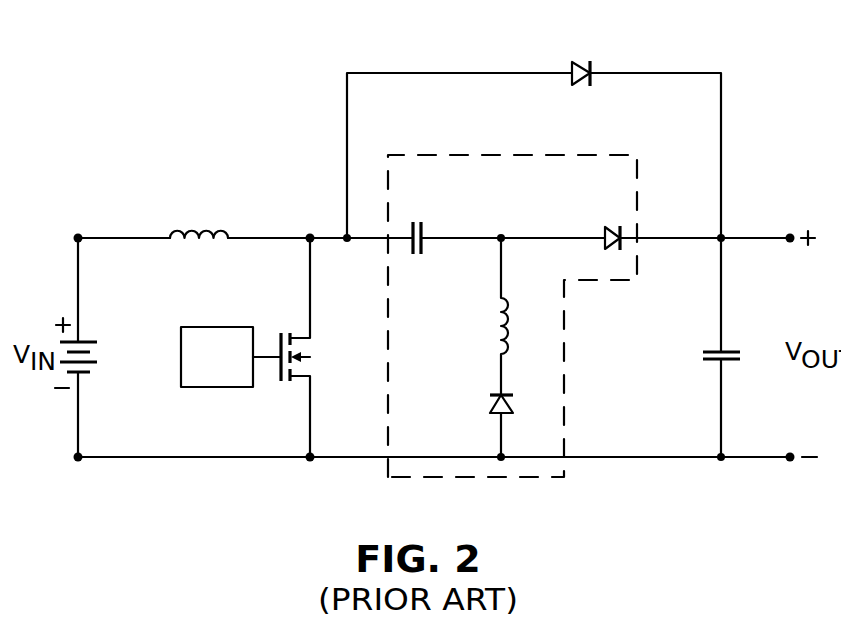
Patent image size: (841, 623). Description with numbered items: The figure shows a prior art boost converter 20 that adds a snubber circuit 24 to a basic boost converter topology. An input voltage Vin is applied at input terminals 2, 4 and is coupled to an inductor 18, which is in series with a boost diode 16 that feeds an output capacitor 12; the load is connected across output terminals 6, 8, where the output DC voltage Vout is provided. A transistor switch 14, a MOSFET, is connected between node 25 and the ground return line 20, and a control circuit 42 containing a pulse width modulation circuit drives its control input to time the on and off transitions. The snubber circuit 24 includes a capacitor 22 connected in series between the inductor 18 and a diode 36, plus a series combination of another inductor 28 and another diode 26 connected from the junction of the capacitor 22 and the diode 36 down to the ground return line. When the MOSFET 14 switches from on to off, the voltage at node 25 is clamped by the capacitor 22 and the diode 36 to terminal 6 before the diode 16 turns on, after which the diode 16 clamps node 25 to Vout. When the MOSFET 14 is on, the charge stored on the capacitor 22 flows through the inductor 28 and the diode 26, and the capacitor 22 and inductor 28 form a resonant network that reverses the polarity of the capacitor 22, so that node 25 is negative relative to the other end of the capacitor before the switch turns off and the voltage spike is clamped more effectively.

The input terminal 2 is at (75, 238).
The input terminal 4 is at (75, 457).
The output terminal 6 is at (789, 235).
The output terminal 8 is at (789, 453).
The output capacitor 12 is at (716, 350).
The transistor switch 14 is at (314, 365).
The boost diode 16 is at (578, 62).
The inductor 18 is at (187, 232).
The boost converter 20 is at (307, 455).
The capacitor 22 is at (424, 229).
The snubber circuit 24 is at (466, 154).
The node 25 is at (308, 235).
The diode 26 is at (489, 405).
The inductor 28 is at (500, 321).
The diode 36 is at (610, 225).
The control circuit 42 is at (208, 326).